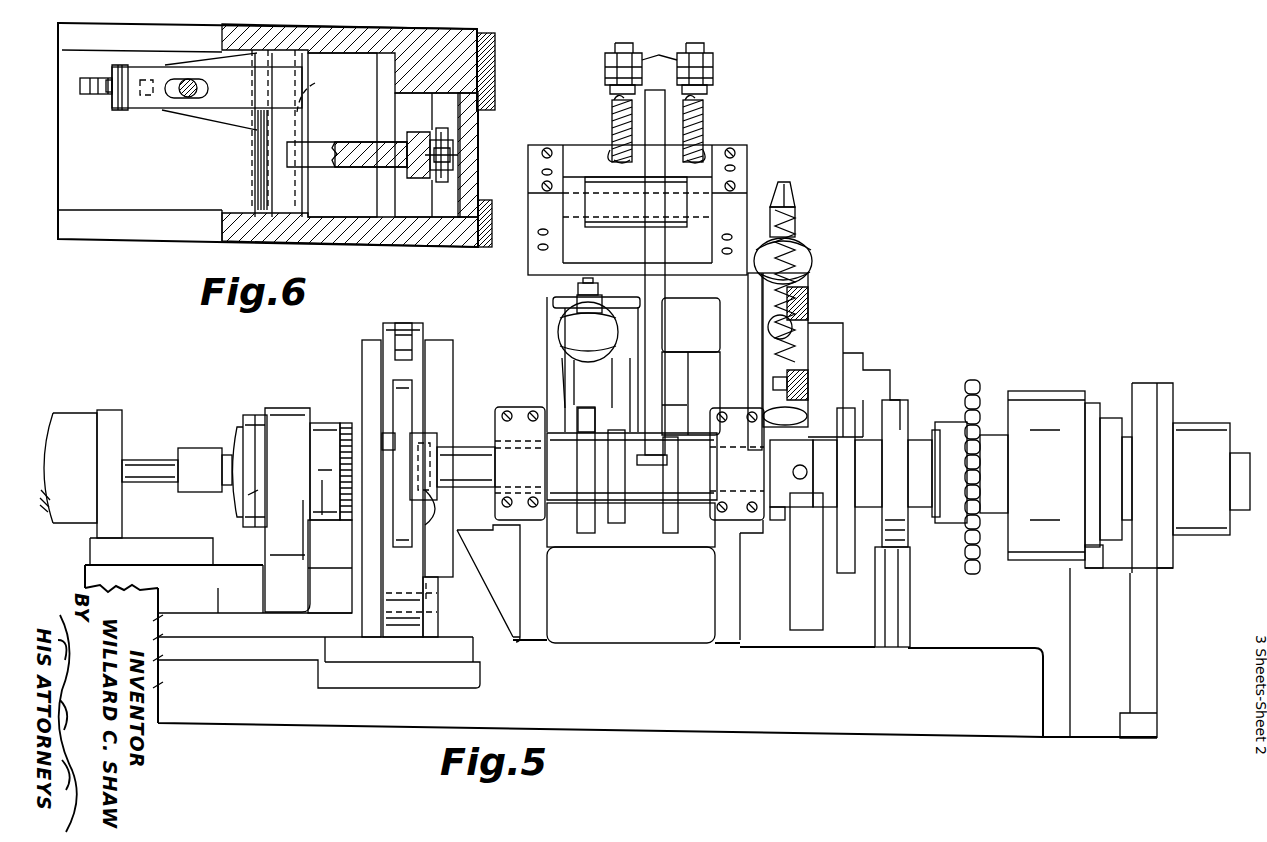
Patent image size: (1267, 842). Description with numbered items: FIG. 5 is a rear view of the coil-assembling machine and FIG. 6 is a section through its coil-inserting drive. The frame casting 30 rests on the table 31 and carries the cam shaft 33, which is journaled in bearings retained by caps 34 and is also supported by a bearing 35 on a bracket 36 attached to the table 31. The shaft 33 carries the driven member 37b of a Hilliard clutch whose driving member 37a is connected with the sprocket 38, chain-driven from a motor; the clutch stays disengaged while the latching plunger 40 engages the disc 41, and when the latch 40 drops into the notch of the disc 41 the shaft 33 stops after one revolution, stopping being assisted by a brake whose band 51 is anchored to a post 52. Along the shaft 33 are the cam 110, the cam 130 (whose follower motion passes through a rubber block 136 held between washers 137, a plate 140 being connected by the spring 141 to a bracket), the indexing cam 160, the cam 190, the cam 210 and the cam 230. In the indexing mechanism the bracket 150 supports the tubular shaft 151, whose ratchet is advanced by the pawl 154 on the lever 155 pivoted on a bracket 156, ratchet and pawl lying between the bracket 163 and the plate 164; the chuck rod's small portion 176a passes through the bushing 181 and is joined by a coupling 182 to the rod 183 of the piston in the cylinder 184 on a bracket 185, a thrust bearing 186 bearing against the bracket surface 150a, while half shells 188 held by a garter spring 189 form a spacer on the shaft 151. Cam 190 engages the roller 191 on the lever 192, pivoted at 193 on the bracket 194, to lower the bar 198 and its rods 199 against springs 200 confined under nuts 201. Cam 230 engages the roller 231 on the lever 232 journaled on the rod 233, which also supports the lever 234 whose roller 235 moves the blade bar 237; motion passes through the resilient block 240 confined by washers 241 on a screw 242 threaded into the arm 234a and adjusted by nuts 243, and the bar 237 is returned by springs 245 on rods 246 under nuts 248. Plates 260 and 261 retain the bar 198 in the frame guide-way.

In FIG. 6, the frame casting 30 is at (102, 250).
In FIG. 5, the frame casting 30 is at (975, 647).
In FIG. 5, the table 31 is at (1112, 740).
In FIG. 5, the cam shaft 33 is at (474, 447).
In FIG. 5, the caps 34 is at (514, 407).
In FIG. 5, the bearing 35 is at (1203, 535).
In FIG. 5, the bracket 36 is at (1157, 623).
In FIG. 5, the driving member 37a is at (1114, 418).
In FIG. 5, the driven member 37b is at (1050, 391).
In FIG. 5, the sprocket 38 is at (974, 380).
In FIG. 5, the latching plunger 40 is at (1085, 560).
In FIG. 5, the disc 41 is at (1090, 450).
In FIG. 5, the brake-lined band 51 is at (905, 405).
In FIG. 5, the post 52 is at (910, 608).
In FIG. 5, the cam 110 is at (845, 573).
In FIG. 5, the cam 130 is at (781, 520).
In FIG. 5, the flexible block 136 is at (810, 260).
In FIG. 5, the washers 137 is at (805, 244).
In FIG. 5, the plate 140 is at (795, 197).
In FIG. 5, the spring 141 is at (793, 226).
In FIG. 5, the bracket 150 is at (476, 572).
In FIG. 5, the bracket surface 150a is at (280, 408).
In FIG. 5, the tubular shaft 151 is at (253, 415).
In FIG. 5, the pawl 154 is at (400, 330).
In FIG. 5, the lever 155 is at (426, 330).
In FIG. 5, the bracket 156 is at (438, 604).
In FIG. 5, the cam 160 is at (404, 400).
In FIG. 5, the bracket 163 is at (450, 345).
In FIG. 5, the plate 164 is at (368, 340).
In FIG. 5, the small portion 176a is at (228, 455).
In FIG. 5, the bushing 181 is at (234, 492).
In FIG. 5, the coupling 182 is at (190, 450).
In FIG. 5, the rod 183 is at (163, 482).
In FIG. 5, the cylinder 184 is at (48, 413).
In FIG. 5, the bracket 185 is at (112, 410).
In FIG. 5, the thrust bearing 186 is at (262, 490).
In FIG. 5, the half shells 188 is at (321, 520).
In FIG. 5, the garter spring 189 is at (346, 423).
In FIG. 5, the cam 190 is at (671, 533).
In FIG. 5, the roller 191 is at (672, 440).
In FIG. 5, the lever 192 is at (665, 290).
In FIG. 5, the pivot 193 is at (638, 222).
In FIG. 5, the bracket 194 is at (733, 175).
In FIG. 6, the bar 198 is at (478, 122).
In FIG. 5, the rods 199 is at (614, 100).
In FIG. 5, the springs 200 is at (612, 132).
In FIG. 5, the nuts 201 is at (605, 60).
In FIG. 5, the cam 210 is at (617, 523).
In FIG. 6, the cam 230 is at (90, 94).
In FIG. 5, the cam 230 is at (583, 533).
In FIG. 6, the roller 231 is at (108, 94).
In FIG. 5, the roller 231 is at (592, 410).
In FIG. 6, the lever 232 is at (150, 110).
In FIG. 5, the lever 232 is at (588, 380).
In FIG. 6, the rod 233 is at (315, 82).
In FIG. 6, the lever 234 is at (347, 148).
In FIG. 6, the arm 234a is at (248, 130).
In FIG. 6, the roller 235 is at (420, 135).
In FIG. 6, the bar 237 is at (442, 196).
In FIG. 5, the resilient block 240 is at (575, 335).
In FIG. 5, the washers 241 is at (562, 320).
In FIG. 6, the screw 242 is at (208, 86).
In FIG. 5, the screw 242 is at (598, 292).
In FIG. 5, the nuts 243 is at (578, 289).
In FIG. 5, the springs 245 is at (610, 106).
In FIG. 5, the rods 246 is at (608, 158).
In FIG. 5, the nuts 248 is at (659, 56).
In FIG. 6, the plate 260 is at (492, 204).
In FIG. 6, the plate 261 is at (495, 62).